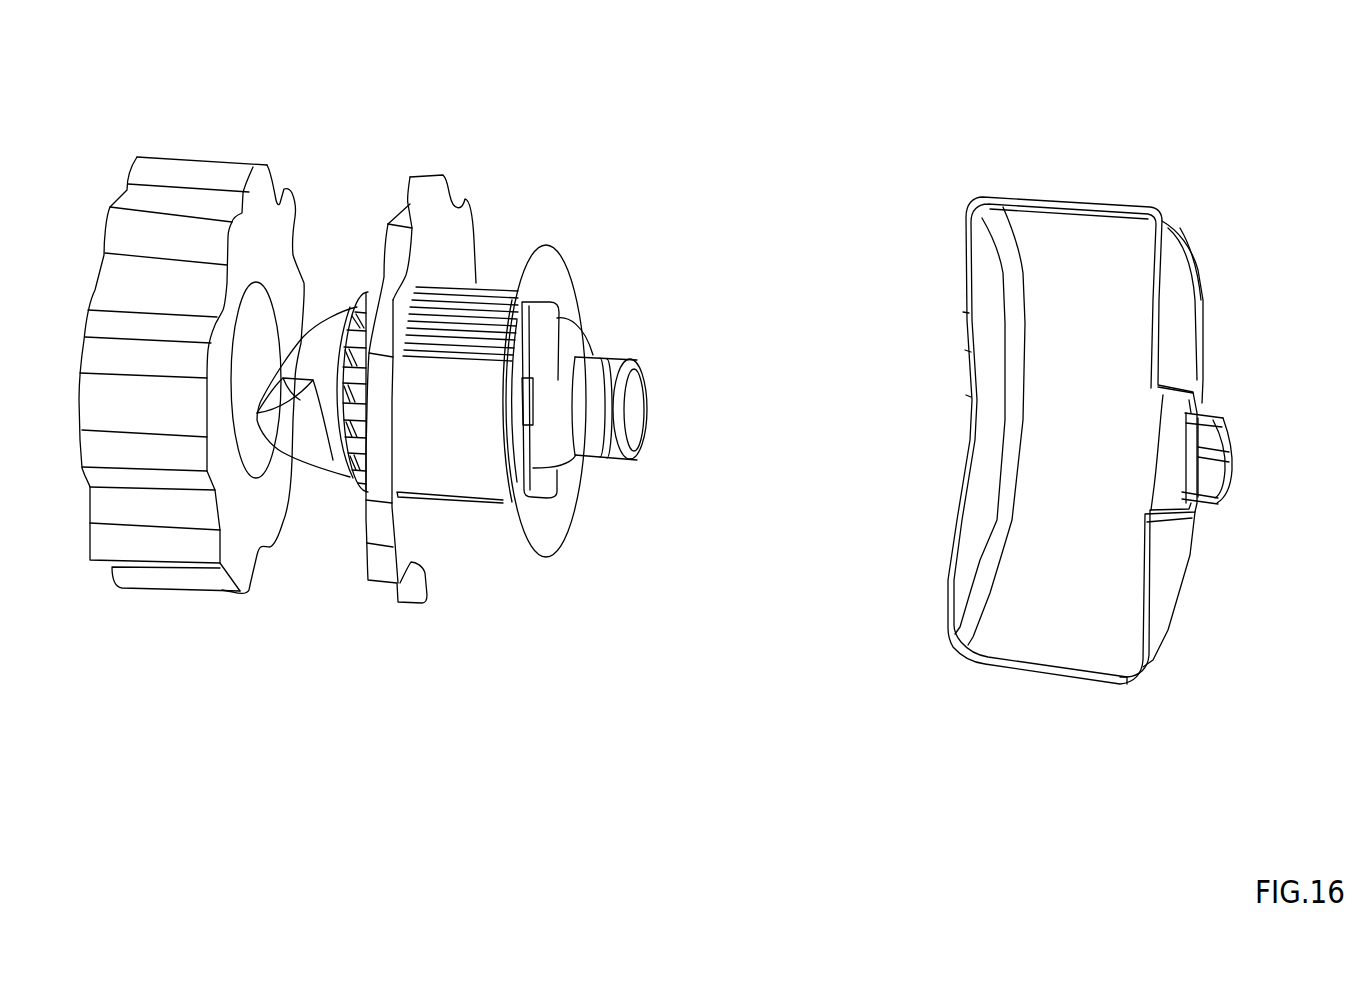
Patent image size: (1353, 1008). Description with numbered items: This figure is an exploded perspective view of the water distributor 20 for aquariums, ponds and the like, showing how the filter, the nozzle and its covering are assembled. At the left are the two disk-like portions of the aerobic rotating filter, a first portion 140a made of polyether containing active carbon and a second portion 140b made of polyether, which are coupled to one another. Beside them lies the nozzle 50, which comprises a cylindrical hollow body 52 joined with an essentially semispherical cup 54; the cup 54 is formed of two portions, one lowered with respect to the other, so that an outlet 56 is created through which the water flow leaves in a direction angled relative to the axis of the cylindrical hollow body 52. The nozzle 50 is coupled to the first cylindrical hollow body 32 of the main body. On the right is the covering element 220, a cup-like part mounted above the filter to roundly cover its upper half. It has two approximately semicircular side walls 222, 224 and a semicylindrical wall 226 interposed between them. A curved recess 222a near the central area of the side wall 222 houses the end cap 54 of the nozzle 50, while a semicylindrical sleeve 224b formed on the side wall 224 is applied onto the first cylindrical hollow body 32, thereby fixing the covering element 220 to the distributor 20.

The water distributor 20 is at (728, 149).
The first cylindrical hollow body 32 is at (593, 457).
The nozzle 50 is at (348, 480).
The cylindrical hollow body 52 is at (468, 473).
The cup 54 is at (353, 304).
The outlet 56 is at (307, 383).
The first portion 140a is at (388, 362).
The second portion 140b is at (167, 153).
The covering element 220 is at (1082, 197).
The side wall 222 is at (965, 214).
The curved recess 222a is at (965, 412).
The side wall 224 is at (1185, 314).
The semicylindrical sleeve 224b is at (1197, 512).
The semicylindrical wall 226 is at (1014, 196).